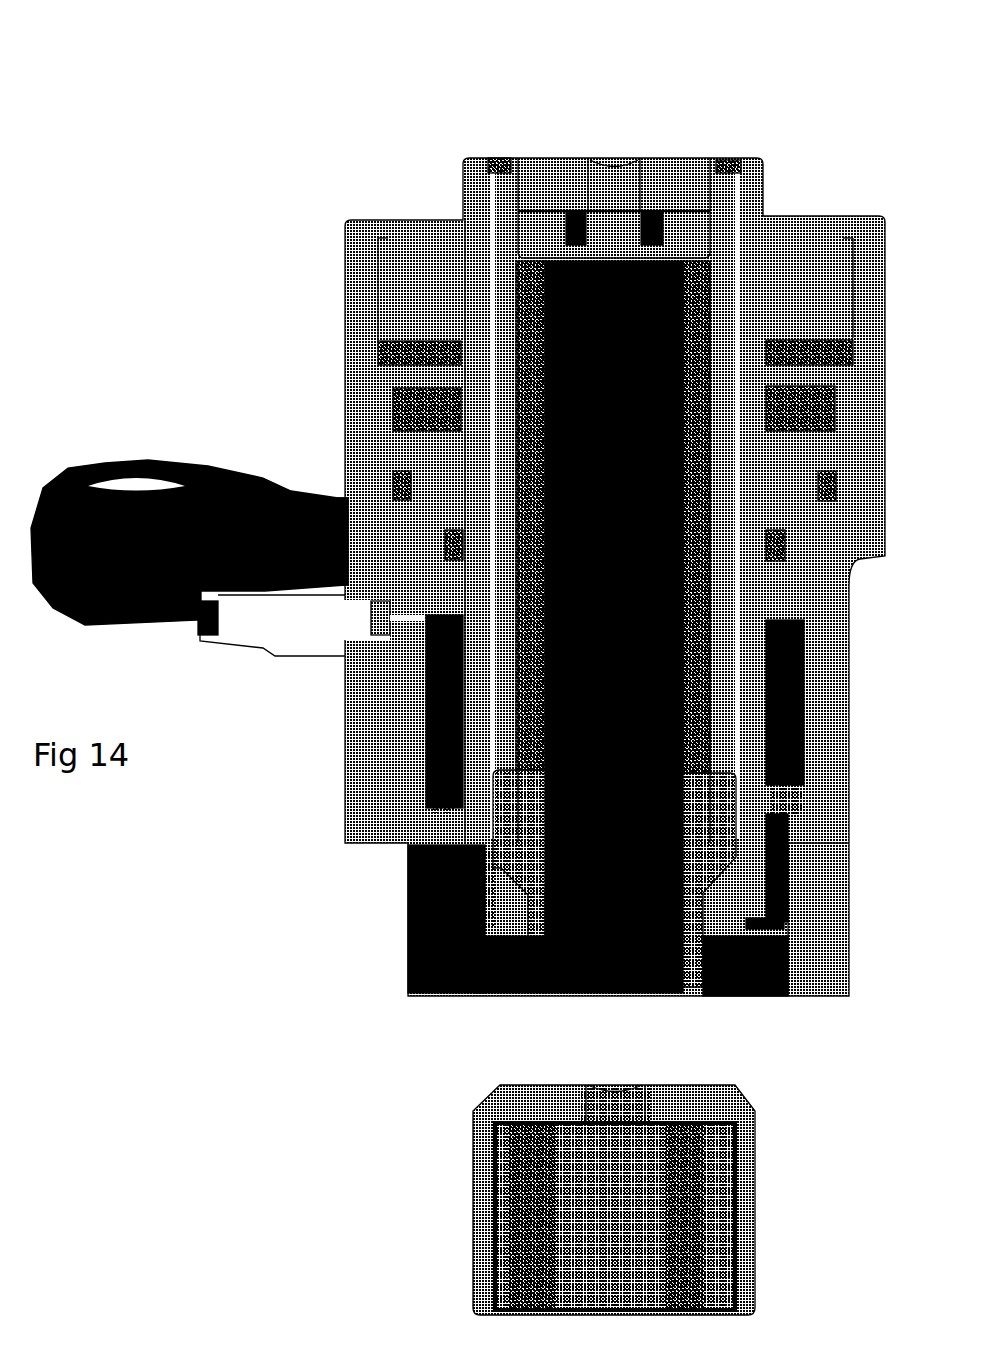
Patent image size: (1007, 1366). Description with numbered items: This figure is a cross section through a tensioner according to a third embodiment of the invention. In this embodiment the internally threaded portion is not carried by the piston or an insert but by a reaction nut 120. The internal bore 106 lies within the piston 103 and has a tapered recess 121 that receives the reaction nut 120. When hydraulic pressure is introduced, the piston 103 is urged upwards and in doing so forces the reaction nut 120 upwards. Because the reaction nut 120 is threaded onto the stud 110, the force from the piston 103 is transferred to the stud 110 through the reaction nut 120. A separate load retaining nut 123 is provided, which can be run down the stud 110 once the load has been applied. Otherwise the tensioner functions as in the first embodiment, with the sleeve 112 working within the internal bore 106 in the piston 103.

The piston 103 is at (473, 320).
The internal bore 106 is at (725, 212).
The sleeve 112 is at (709, 247).
The stud 110 is at (575, 965).
The reaction nut 120 is at (532, 848).
The tapered recess 121 is at (498, 868).
The load retaining nut 123 is at (485, 1190).